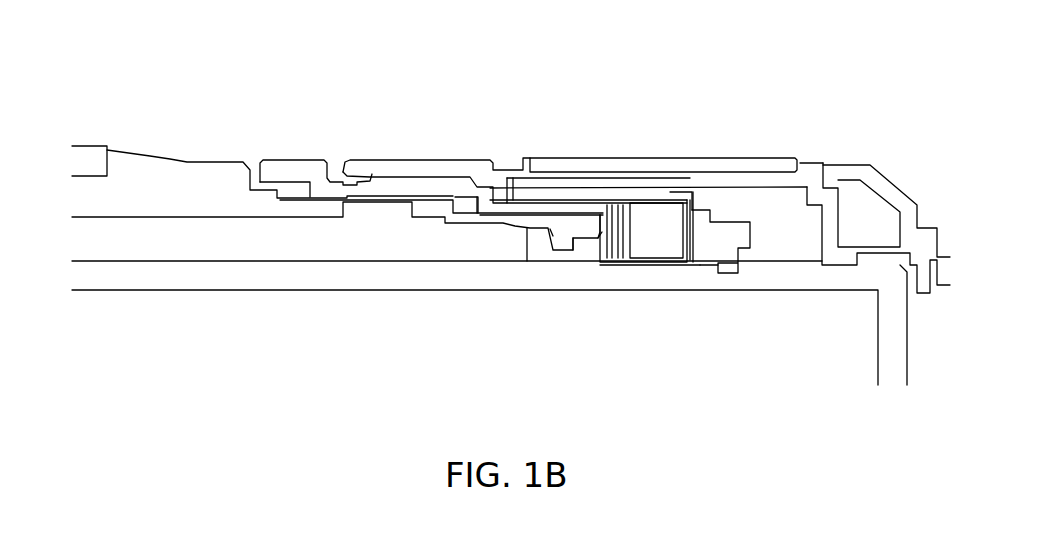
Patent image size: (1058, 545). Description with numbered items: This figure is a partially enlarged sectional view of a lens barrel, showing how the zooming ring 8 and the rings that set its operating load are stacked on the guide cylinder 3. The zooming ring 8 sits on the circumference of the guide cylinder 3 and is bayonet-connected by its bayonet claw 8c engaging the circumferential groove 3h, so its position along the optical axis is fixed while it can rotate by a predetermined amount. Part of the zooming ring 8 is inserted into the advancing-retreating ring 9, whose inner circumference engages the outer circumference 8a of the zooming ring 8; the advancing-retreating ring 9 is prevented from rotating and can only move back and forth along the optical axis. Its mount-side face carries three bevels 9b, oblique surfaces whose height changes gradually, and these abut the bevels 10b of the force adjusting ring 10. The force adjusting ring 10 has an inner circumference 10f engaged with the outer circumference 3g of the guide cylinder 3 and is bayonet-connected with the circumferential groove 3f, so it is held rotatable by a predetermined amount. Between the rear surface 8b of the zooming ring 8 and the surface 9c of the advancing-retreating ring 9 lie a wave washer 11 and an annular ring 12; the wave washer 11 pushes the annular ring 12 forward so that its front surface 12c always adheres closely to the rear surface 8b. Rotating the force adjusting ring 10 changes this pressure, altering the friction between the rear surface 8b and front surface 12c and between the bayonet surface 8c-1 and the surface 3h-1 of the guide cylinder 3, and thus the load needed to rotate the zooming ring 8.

The guide cylinder 3 is at (845, 292).
The circumferential groove 3f is at (728, 275).
The outer circumference 3g is at (662, 272).
The circumferential groove 3h is at (563, 245).
The surface 3h-1 is at (562, 238).
The zooming ring 8 is at (165, 169).
The outer circumference 8a is at (580, 160).
The rear surface 8b is at (605, 200).
The bayonet claw 8c is at (553, 245).
The bayonet surface 8c-1 is at (553, 243).
The advancing-retreating ring 9 is at (282, 167).
The bevels 9b is at (682, 262).
The surface 9c is at (645, 200).
The force adjusting ring 10 is at (375, 166).
The bevels 10b is at (705, 195).
The inner circumference 10f is at (712, 262).
The wave washer 11 is at (625, 260).
The annular ring 12 is at (607, 262).
The front surface 12c is at (590, 250).